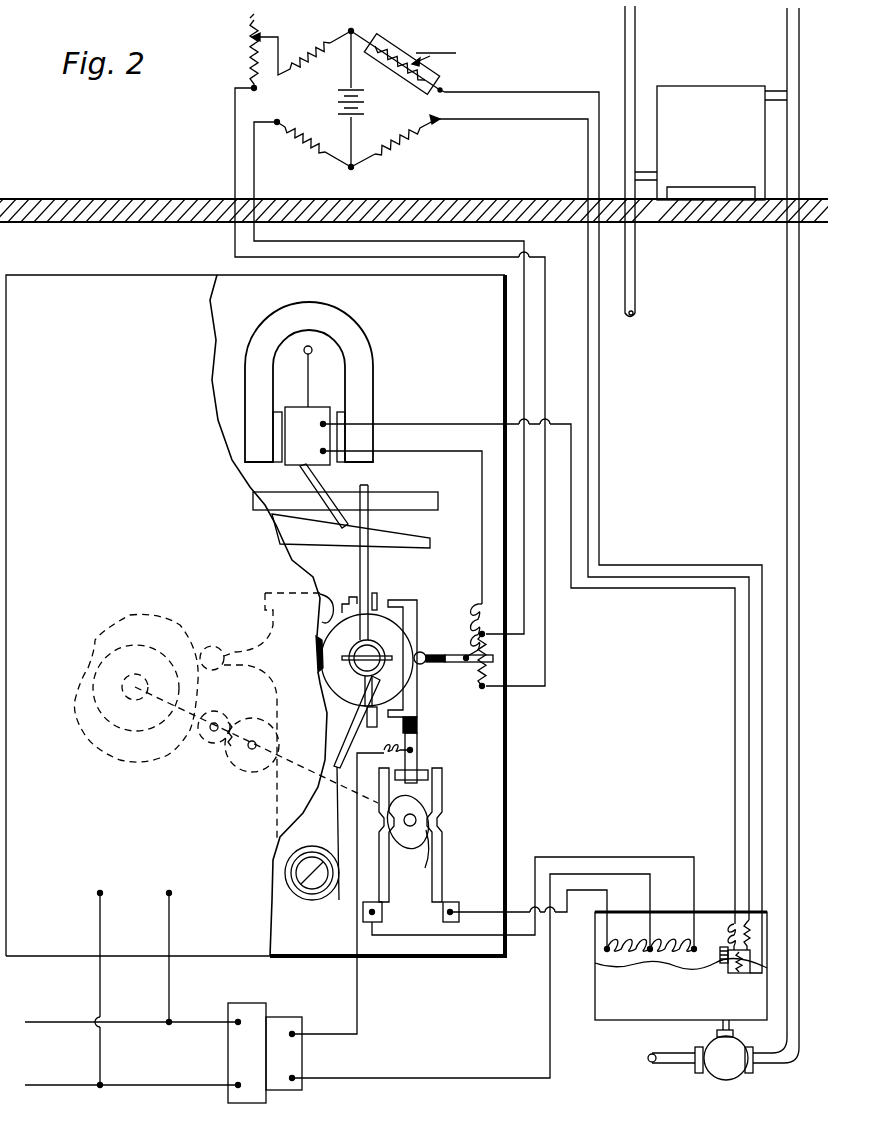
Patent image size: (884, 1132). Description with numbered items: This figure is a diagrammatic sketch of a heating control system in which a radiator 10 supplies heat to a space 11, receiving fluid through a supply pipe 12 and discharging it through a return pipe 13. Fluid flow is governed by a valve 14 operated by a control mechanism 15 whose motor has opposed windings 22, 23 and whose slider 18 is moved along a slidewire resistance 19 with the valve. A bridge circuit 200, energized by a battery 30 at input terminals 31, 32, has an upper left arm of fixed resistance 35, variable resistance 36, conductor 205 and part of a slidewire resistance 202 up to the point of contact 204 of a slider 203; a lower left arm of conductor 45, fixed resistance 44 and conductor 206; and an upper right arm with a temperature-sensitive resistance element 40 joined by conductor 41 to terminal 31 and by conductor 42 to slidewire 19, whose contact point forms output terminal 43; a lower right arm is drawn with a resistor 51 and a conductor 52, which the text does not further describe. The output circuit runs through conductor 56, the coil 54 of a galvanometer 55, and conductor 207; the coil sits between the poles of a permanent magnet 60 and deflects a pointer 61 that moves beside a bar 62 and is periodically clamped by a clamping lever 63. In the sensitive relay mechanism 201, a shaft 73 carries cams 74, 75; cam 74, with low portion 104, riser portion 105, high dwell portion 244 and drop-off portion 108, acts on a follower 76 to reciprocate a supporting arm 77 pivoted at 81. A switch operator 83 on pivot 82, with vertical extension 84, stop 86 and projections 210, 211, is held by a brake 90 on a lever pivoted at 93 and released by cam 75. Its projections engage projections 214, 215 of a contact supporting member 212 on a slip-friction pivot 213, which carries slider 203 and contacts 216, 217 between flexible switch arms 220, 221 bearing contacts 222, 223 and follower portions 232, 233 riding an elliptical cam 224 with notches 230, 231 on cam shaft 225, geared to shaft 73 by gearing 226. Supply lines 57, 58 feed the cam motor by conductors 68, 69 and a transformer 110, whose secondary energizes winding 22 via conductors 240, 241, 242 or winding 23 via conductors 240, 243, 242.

The radiator 10 is at (694, 88).
The space 11 is at (712, 46).
The supply pipe 12 is at (800, 157).
The return pipe 13 is at (637, 271).
The valve 14 is at (725, 1081).
The control mechanism 15 is at (705, 910).
The slider 18 is at (716, 935).
The slidewire resistance 19 is at (765, 920).
The winding 22 is at (634, 940).
The winding 23 is at (678, 940).
The battery 30 is at (367, 101).
The input terminal 31 is at (362, 18).
The input terminal 32 is at (352, 170).
The fixed resistance 35 is at (311, 55).
The variable resistance 36 is at (248, 48).
The resistance element 40 is at (438, 86).
The conductor 41 is at (370, 48).
The conductor 42 is at (600, 393).
The output terminal 43 is at (750, 976).
The fixed resistance 44 is at (305, 141).
The conductor 45 is at (332, 160).
The bridge resistor 51 is at (404, 140).
The conductor 52 is at (529, 122).
The coil 54 is at (318, 406).
The galvanometer 55 is at (378, 384).
The conductor 56 is at (735, 676).
The supply line 57 is at (44, 1024).
The supply line 58 is at (40, 1085).
The permanent magnet 60 is at (262, 322).
The pointer 61 is at (328, 485).
The bar 62 is at (409, 495).
The clamping lever 63 is at (420, 543).
The conductor 68 is at (101, 990).
The conductor 69 is at (170, 984).
The shaft 73 is at (140, 686).
The cam 74 is at (157, 640).
The cam 75 is at (144, 725).
The follower 76 is at (215, 645).
The supporting arm 77 is at (333, 836).
The fixed pivot 81 is at (312, 901).
The pivot 82 is at (372, 648).
The switch operator 83 is at (346, 699).
The vertical extension 84 is at (368, 565).
The stop 86 is at (328, 603).
The brake 90 is at (320, 640).
The pivot 93 is at (306, 586).
The low portion 104 is at (93, 670).
The riser portion 105 is at (85, 705).
The drop-off portion 108 is at (112, 633).
The transformer 110 is at (257, 1104).
The bridge circuit 200 is at (318, 113).
The sensitive relay mechanism 201 is at (480, 357).
The slidewire resistance 202 is at (490, 667).
The slider 203 is at (470, 664).
The output terminal 204 is at (492, 652).
The conductor 205 is at (235, 245).
The conductor 206 is at (349, 232).
The conductor 207 is at (482, 565).
The projection 210 is at (372, 593).
The projection 211 is at (377, 708).
The contact supporting member 212 is at (418, 708).
The slip-friction pivot 213 is at (424, 651).
The projection 214 is at (401, 600).
The projection 215 is at (384, 748).
The contact 216 is at (419, 749).
The contact 217 is at (428, 771).
The flexible switch arm 220 is at (383, 885).
The flexible switch arm 221 is at (444, 876).
The contact 222 is at (385, 769).
The contact 223 is at (445, 785).
The elliptical cam 224 is at (408, 851).
The cam shaft 225 is at (425, 870).
The gearing 226 is at (222, 752).
The notch 230 is at (415, 810).
The notch 231 is at (445, 829).
The follower portion 232 is at (380, 822).
The follower portion 233 is at (445, 820).
The conductor 240 is at (358, 998).
The conductor 241 is at (461, 913).
The conductor 242 is at (551, 991).
The conductor 243 is at (420, 936).
The high dwell portion 244 is at (127, 761).